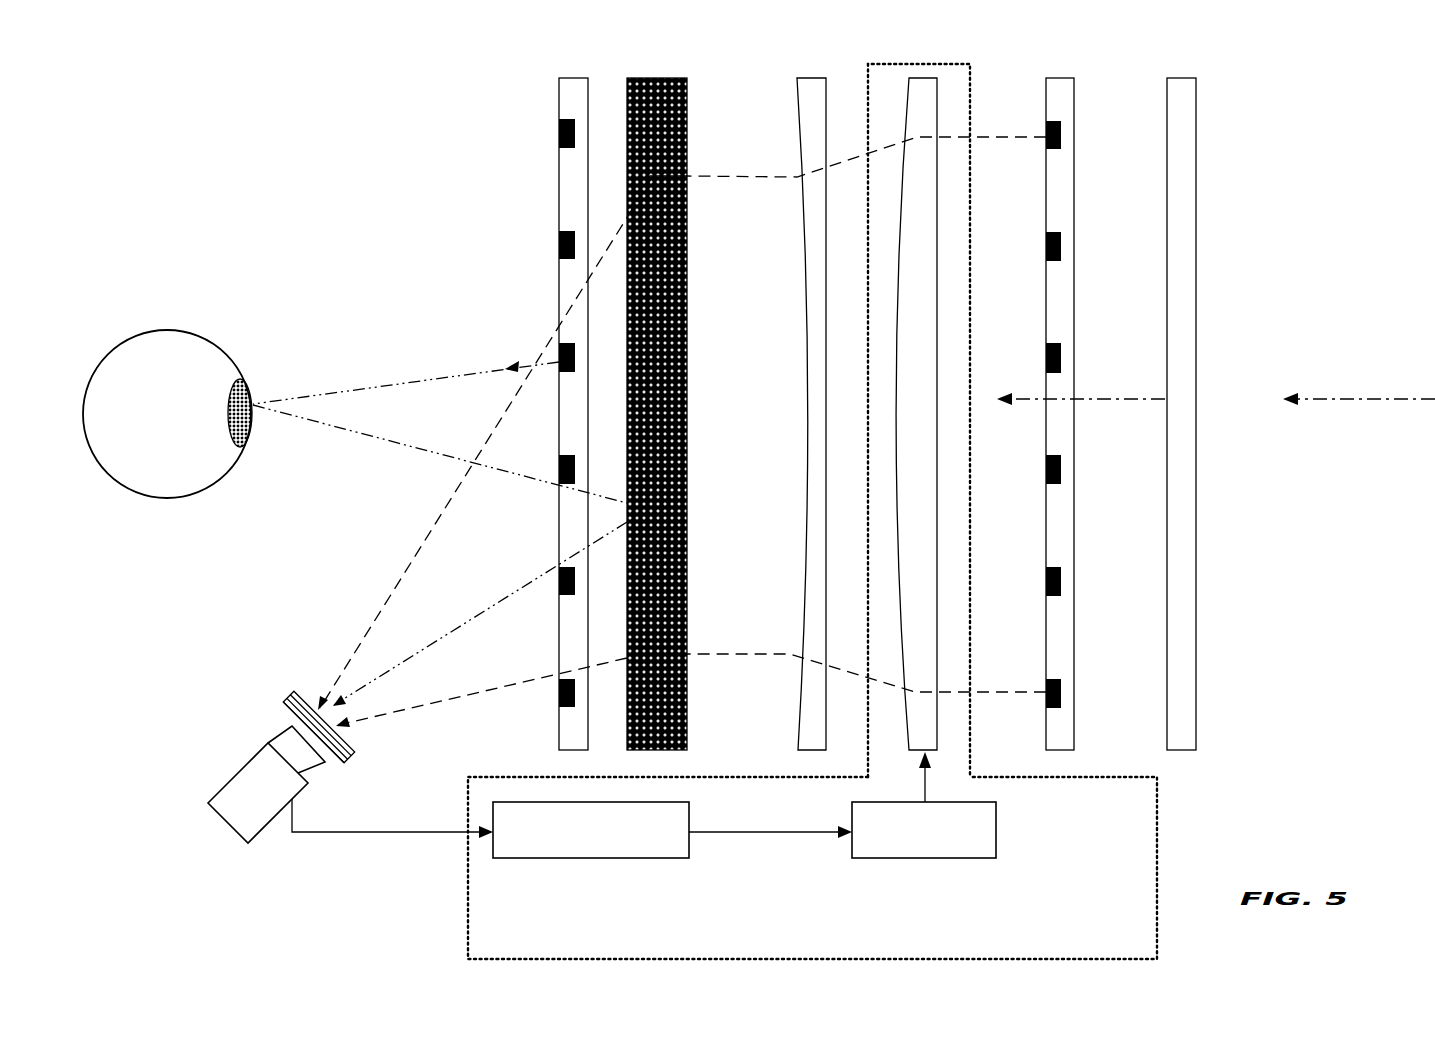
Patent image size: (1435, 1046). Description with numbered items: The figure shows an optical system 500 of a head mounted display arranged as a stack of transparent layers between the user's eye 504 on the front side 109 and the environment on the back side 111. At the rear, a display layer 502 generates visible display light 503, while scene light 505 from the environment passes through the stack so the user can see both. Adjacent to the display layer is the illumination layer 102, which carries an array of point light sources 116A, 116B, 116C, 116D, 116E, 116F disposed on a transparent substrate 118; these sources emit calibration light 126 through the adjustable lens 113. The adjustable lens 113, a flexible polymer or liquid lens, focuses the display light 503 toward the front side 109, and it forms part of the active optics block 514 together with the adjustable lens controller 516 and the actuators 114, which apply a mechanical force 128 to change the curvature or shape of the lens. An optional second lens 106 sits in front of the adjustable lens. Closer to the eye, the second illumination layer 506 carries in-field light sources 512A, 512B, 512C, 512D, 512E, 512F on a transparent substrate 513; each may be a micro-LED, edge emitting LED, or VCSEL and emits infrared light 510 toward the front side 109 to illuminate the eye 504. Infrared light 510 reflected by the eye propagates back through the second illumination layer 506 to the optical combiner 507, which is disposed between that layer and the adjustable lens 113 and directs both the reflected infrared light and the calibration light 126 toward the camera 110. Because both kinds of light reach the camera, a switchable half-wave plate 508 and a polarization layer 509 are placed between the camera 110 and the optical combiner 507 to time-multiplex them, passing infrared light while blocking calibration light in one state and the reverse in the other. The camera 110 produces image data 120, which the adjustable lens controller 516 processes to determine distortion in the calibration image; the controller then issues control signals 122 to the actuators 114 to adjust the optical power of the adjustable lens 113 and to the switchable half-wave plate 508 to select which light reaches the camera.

The optical system 500 is at (1366, 133).
The display layer 502 is at (1180, 78).
The illumination layer 102 is at (1068, 78).
The transparent substrate 118 is at (1055, 178).
The point light source 116A is at (1046, 125).
The point light source 116B is at (1046, 236).
The point light source 116C is at (1046, 348).
The point light source 116D is at (1046, 460).
The point light source 116E is at (1046, 572).
The point light source 116F is at (1046, 684).
The second lens 106 is at (815, 78).
The adjustable lens 113 is at (925, 78).
The second illumination layer 506 is at (572, 78).
The transparent substrate 513 is at (577, 193).
The optical combiner 507 is at (663, 78).
The in-field light source 512A is at (559, 131).
The in-field light source 512B is at (559, 243).
The in-field light source 512C is at (559, 353).
The in-field light source 512D is at (559, 467).
The in-field light source 512E is at (559, 578).
The in-field light source 512F is at (559, 692).
The eye 504 is at (197, 332).
The infrared light 510 is at (402, 383).
The calibration light 126 is at (723, 654).
The switchable half-wave plate 508 is at (295, 691).
The polarization layer 509 is at (286, 703).
The camera 110 is at (238, 784).
The image data 120 is at (342, 833).
The adjustable lens controller 516 is at (672, 803).
The control signals 122 is at (762, 832).
The actuators 114 is at (997, 832).
The mechanical force 128 is at (927, 794).
The active optics block 514 is at (1160, 860).
The display light 503 is at (1098, 399).
The scene light 505 is at (1334, 403).
The front side 109 is at (422, 180).
The back side 111 is at (1252, 513).